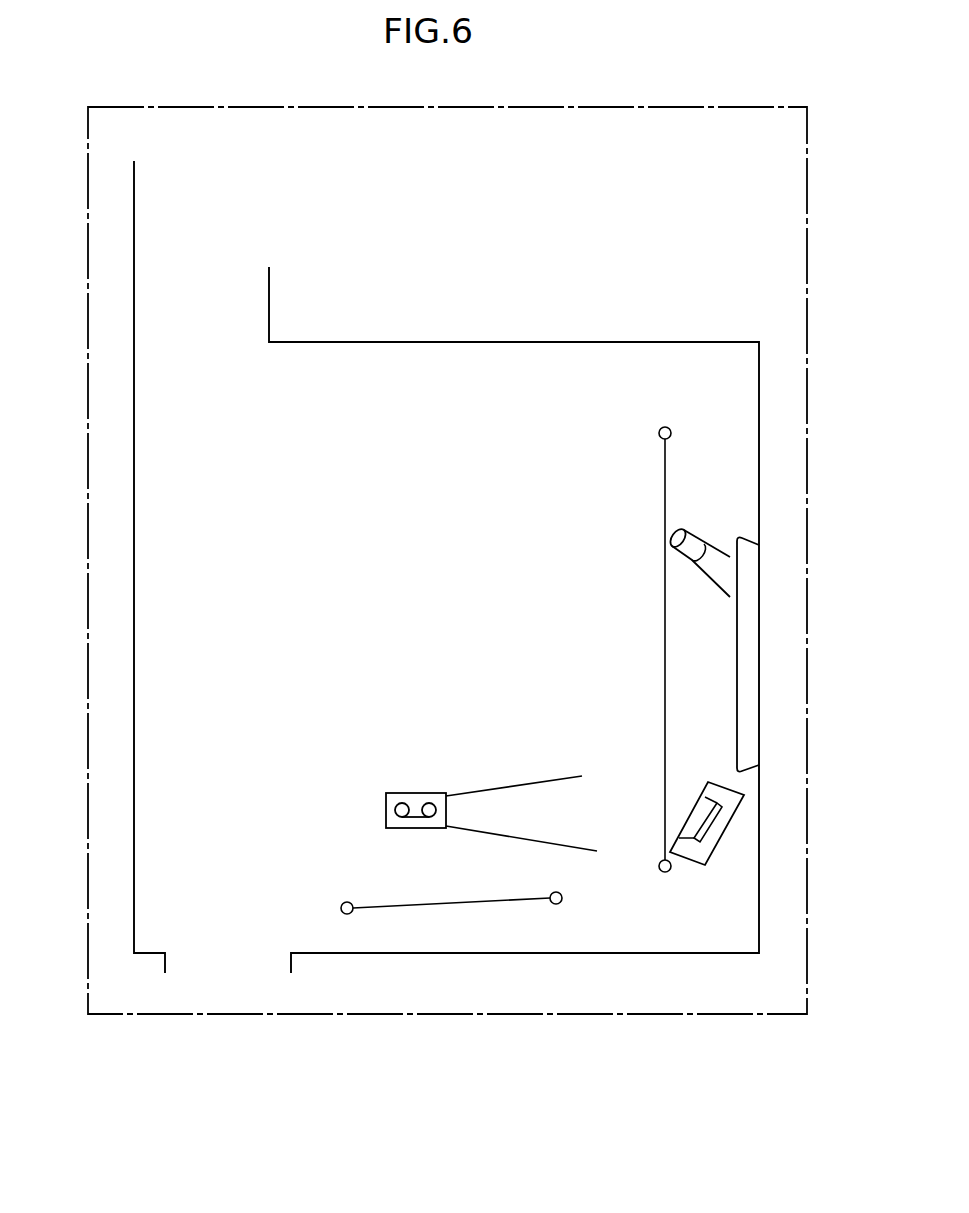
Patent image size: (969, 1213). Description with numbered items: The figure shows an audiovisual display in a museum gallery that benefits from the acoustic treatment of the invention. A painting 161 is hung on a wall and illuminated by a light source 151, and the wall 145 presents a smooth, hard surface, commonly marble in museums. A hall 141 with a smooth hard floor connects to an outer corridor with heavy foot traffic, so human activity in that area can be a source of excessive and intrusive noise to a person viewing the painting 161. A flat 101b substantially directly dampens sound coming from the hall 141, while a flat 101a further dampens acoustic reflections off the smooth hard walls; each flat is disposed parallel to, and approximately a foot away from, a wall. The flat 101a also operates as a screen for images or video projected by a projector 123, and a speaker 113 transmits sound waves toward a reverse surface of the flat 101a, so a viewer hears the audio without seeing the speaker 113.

The wall 145 is at (132, 555).
The hall 141 is at (205, 317).
The flat 101a is at (665, 469).
The flat 101b is at (378, 905).
The projector 123 is at (415, 792).
The light source 151 is at (681, 548).
The painting 161 is at (752, 665).
The speaker 113 is at (720, 812).